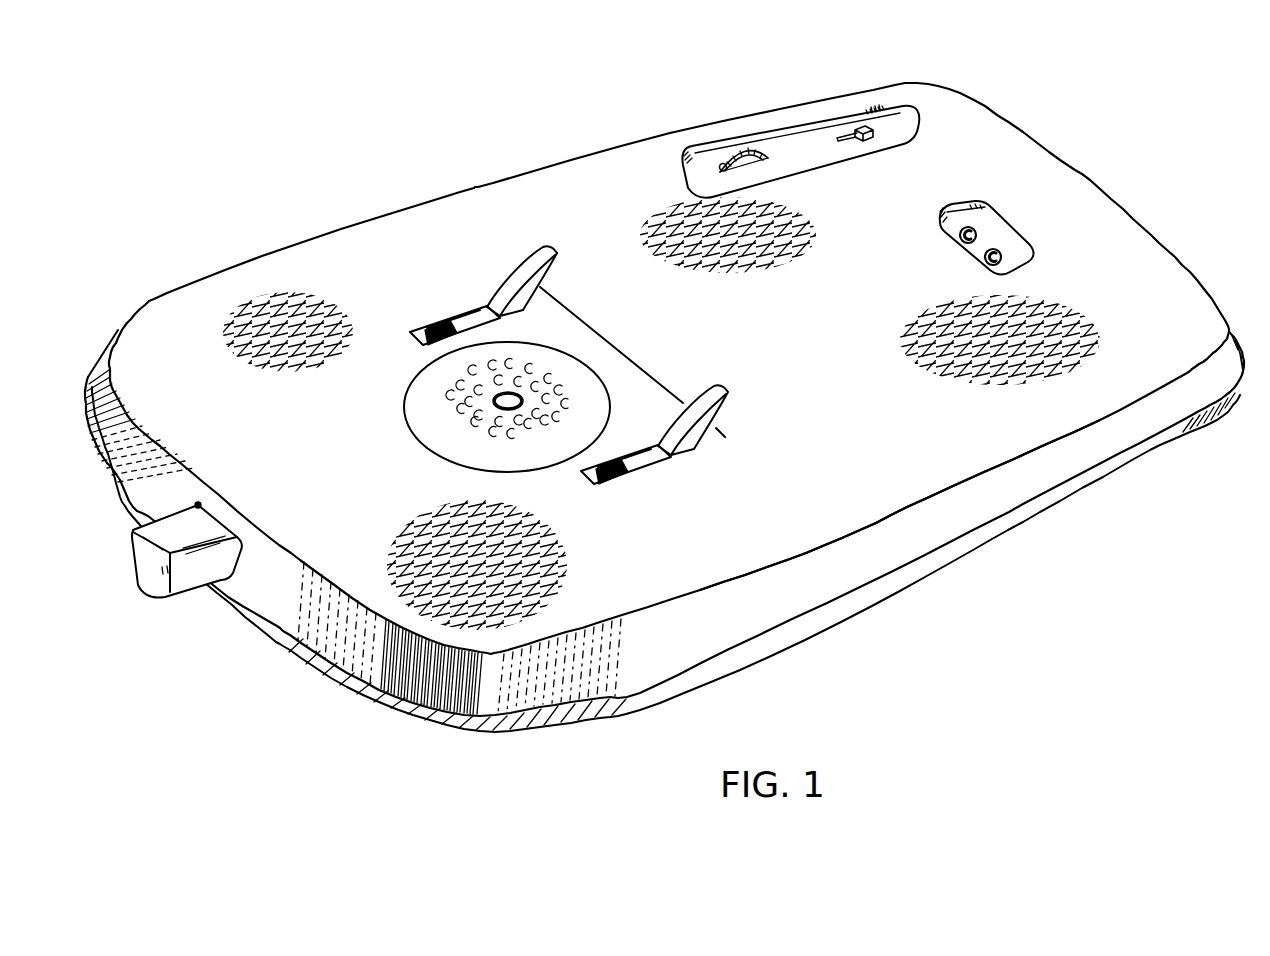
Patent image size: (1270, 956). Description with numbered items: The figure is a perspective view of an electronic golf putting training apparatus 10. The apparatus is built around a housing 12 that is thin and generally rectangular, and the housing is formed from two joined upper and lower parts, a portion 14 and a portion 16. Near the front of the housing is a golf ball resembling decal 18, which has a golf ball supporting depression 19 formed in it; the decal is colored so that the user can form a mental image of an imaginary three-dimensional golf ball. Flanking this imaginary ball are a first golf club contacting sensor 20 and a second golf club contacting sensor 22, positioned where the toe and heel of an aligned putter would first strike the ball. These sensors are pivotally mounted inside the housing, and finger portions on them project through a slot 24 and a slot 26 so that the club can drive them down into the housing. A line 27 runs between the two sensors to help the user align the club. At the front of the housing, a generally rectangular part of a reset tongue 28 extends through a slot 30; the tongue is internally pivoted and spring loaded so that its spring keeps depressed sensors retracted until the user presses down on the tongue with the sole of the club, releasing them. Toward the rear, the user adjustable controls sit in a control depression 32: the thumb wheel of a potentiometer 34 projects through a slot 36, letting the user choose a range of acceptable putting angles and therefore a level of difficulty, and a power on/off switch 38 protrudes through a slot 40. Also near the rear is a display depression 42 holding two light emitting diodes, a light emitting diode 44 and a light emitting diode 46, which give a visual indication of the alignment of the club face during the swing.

The electronic golf putting training apparatus 10 is at (300, 693).
The housing 12 is at (517, 713).
The portion 14 is at (732, 623).
The portion 16 is at (825, 613).
The golf ball resembling decal 18 is at (415, 403).
The golf ball supporting depression 19 is at (490, 412).
The first golf club contacting sensor 20 is at (557, 255).
The second golf club contacting sensor 22 is at (724, 393).
The slot 24 is at (427, 327).
The slot 26 is at (593, 475).
The line 27 is at (612, 333).
The reset tongue 28 is at (180, 580).
The slot 30 is at (198, 505).
The control depression 32 is at (693, 168).
The potentiometer 34 is at (750, 158).
The slot 36 is at (724, 164).
The power on/off switch 38 is at (875, 105).
The slot 40 is at (842, 138).
The display depression 42 is at (1000, 242).
The light emitting diode 44 is at (977, 230).
The light emitting diode 46 is at (1003, 257).